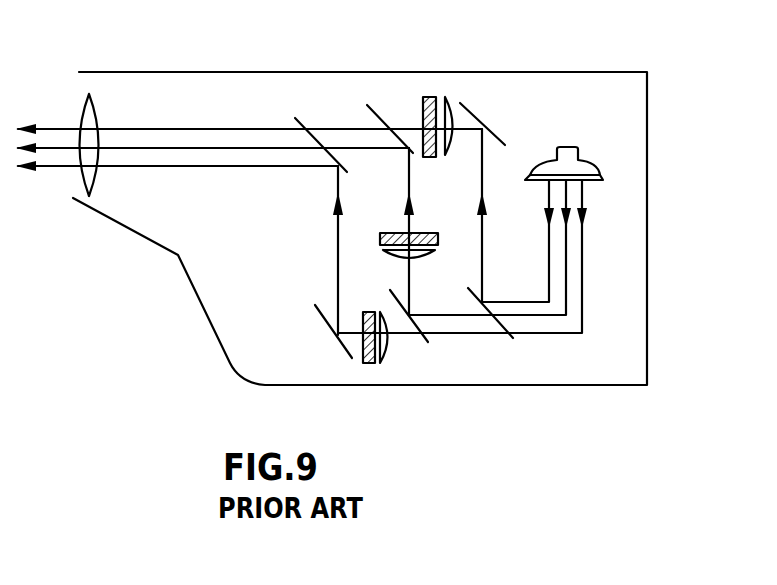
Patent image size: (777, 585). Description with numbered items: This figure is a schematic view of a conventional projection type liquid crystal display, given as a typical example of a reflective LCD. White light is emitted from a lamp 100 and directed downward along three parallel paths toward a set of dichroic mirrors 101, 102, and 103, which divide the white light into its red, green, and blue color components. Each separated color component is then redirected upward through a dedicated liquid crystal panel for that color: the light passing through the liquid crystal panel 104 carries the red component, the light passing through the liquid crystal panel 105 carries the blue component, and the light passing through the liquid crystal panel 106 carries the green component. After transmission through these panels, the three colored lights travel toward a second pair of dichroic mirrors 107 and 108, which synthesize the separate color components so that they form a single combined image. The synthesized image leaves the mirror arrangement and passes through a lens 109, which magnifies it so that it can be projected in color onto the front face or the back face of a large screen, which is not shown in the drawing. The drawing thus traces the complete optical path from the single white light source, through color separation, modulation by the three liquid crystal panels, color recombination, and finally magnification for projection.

The lamp 100 is at (595, 163).
The dichroic mirror 101 is at (512, 336).
The dichroic mirror 102 is at (430, 342).
The dichroic mirror 103 is at (325, 327).
The liquid crystal panel 104 is at (430, 97).
The liquid crystal panel 105 is at (380, 240).
The liquid crystal panel 106 is at (388, 357).
The dichroic mirror 107 is at (375, 110).
The dichroic mirror 108 is at (300, 122).
The lens 109 is at (92, 113).